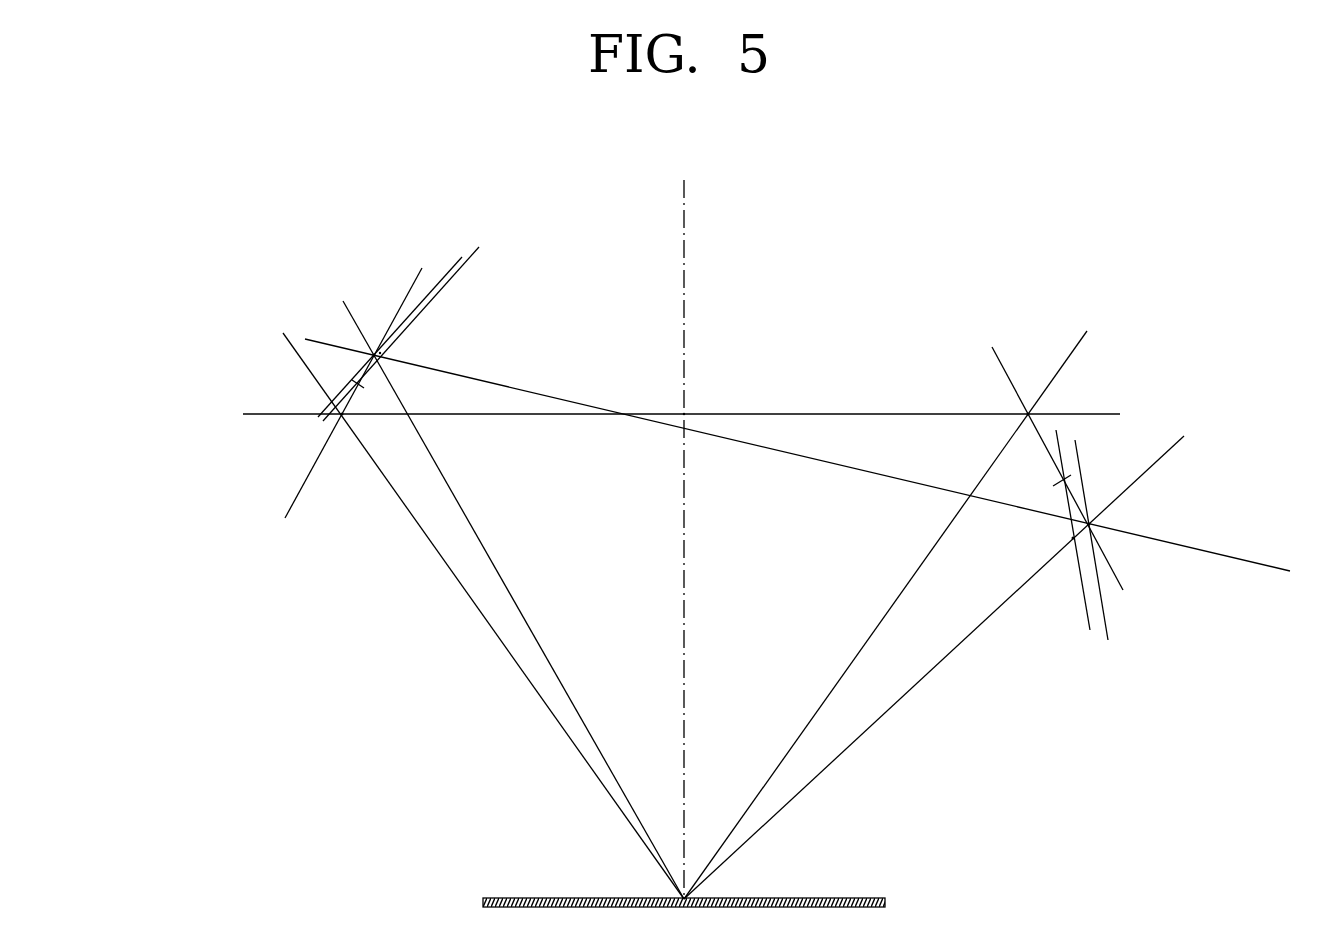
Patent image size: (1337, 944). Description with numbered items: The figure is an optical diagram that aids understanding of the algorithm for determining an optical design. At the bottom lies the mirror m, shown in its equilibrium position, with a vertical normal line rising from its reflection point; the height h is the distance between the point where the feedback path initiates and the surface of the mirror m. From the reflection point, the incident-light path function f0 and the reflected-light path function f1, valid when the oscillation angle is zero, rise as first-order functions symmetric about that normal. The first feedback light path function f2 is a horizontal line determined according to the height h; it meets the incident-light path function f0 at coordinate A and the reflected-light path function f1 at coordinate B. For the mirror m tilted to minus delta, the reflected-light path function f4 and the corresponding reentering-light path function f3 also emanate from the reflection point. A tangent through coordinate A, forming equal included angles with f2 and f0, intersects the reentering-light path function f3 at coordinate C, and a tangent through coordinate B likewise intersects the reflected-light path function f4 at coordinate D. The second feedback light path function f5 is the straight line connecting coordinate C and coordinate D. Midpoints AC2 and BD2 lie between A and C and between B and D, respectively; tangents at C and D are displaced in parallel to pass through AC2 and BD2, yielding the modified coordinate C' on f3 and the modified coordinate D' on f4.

The incident-light path function f0 is at (892, 598).
The reflected-light path function f1 is at (477, 599).
The first feedback light path function f2 is at (698, 416).
The reentering-light path function f3 is at (954, 658).
The reflected-light path function f4 is at (505, 585).
The second feedback light path function f5 is at (813, 460).
The coordinate A is at (1025, 412).
The coordinate B is at (343, 420).
The coordinate C is at (1142, 507).
The modified coordinate C' is at (1025, 554).
The coordinate D is at (342, 327).
The modified coordinate D' is at (432, 338).
The coordinate AC2 is at (1062, 479).
The coordinate BD2 is at (358, 383).
The height h is at (685, 413).
The mirror m is at (852, 899).